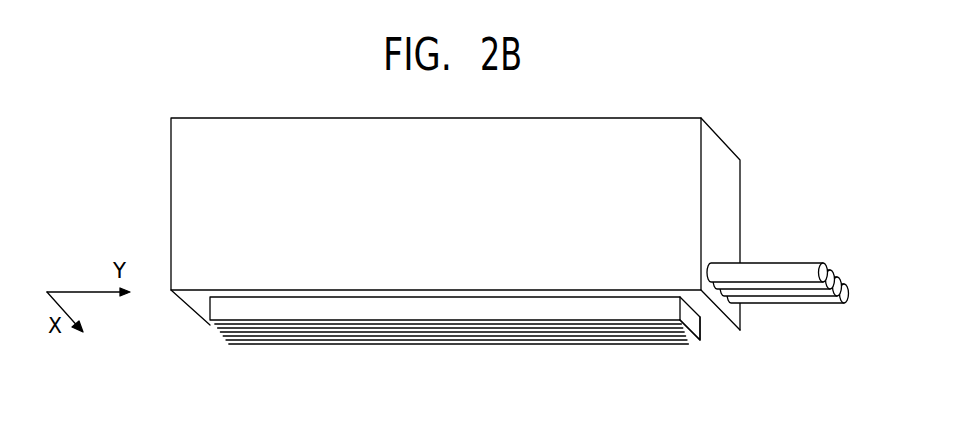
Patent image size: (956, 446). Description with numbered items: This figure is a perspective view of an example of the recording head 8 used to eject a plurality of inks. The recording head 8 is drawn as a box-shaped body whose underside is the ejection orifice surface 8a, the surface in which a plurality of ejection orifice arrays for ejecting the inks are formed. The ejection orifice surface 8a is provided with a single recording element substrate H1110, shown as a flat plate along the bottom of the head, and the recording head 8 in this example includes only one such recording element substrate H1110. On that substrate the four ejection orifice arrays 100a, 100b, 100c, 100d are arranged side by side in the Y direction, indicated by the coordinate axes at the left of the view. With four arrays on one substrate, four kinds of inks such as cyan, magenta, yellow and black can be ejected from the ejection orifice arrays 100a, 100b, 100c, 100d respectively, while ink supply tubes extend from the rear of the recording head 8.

The recording head 8 is at (725, 183).
The ejection orifice surface 8a is at (688, 345).
The recording element substrate H1110 is at (701, 336).
The ejection orifice array 100a is at (212, 328).
The ejection orifice array 100b is at (219, 331).
The ejection orifice array 100c is at (223, 335).
The ejection orifice array 100d is at (228, 341).